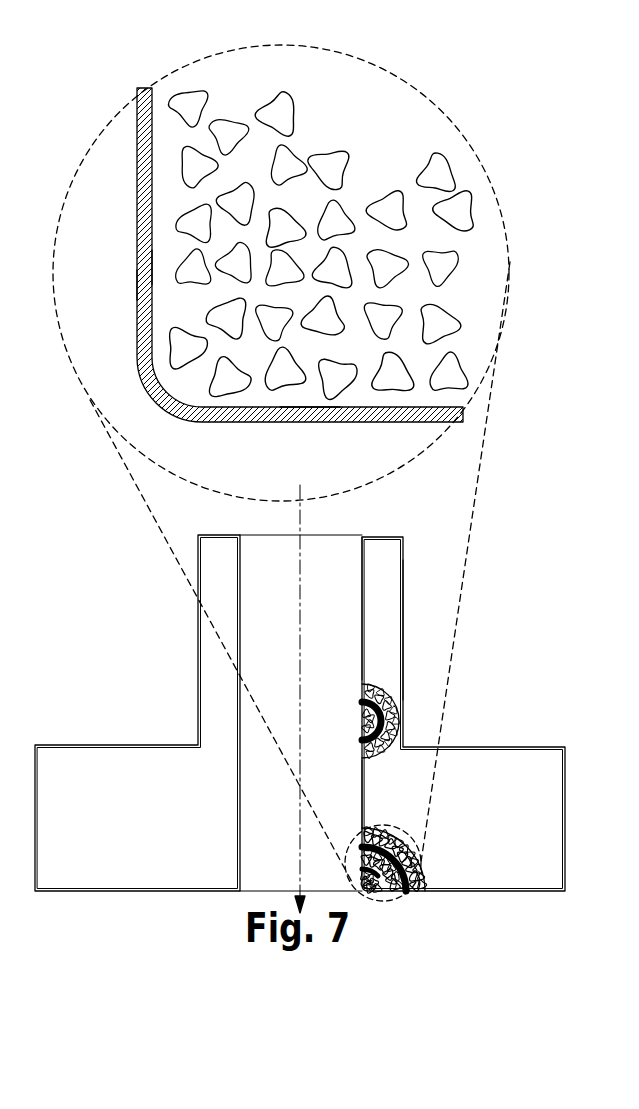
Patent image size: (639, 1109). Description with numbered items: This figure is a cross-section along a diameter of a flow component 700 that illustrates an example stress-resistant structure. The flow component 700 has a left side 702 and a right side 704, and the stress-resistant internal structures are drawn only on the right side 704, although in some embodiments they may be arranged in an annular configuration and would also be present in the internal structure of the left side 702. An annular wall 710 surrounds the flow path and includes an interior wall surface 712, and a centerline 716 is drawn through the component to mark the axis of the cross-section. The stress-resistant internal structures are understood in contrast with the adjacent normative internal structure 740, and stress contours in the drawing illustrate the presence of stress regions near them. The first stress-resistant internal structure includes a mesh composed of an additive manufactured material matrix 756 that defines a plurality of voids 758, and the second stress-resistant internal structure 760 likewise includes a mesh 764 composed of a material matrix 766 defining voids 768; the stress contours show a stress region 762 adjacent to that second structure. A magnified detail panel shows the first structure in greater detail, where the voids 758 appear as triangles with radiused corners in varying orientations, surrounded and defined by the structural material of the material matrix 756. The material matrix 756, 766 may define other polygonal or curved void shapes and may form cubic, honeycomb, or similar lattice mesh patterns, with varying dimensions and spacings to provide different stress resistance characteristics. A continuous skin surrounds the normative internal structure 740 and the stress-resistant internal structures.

The flow component 700 is at (190, 514).
The left side 702 is at (152, 899).
The right side 704 is at (494, 903).
The annular wall 710 is at (403, 617).
The interior wall surface 712 is at (143, 283).
The centerline 716 is at (362, 568).
The normative internal structure 740 is at (458, 213).
The material matrix 756 is at (197, 250).
The voids 758 is at (185, 212).
The stress-resistant internal structure 760 is at (353, 749).
The stress region 762 is at (403, 707).
The mesh 764 is at (385, 700).
The material matrix 766 is at (398, 712).
The voids 768 is at (383, 683).